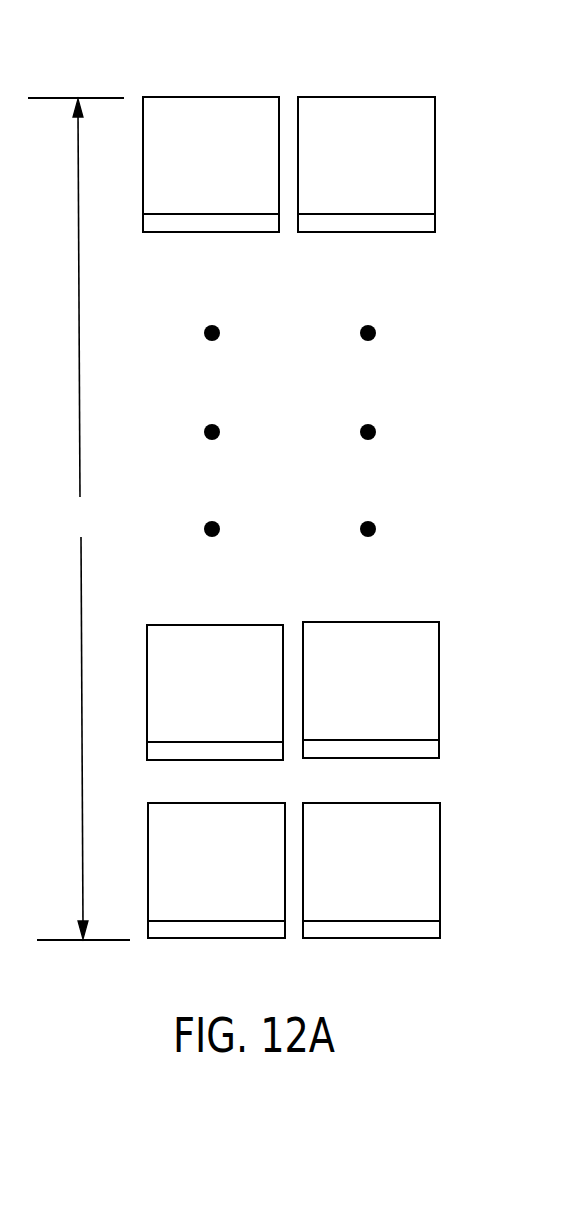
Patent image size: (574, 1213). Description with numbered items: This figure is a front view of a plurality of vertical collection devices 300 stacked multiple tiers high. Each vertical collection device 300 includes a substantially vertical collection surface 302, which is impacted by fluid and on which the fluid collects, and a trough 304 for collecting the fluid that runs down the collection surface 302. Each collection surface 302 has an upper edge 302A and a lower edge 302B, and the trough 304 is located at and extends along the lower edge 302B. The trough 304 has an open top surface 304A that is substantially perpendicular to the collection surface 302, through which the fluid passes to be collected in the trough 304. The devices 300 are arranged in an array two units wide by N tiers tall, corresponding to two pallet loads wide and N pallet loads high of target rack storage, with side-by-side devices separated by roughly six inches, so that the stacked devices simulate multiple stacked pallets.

The vertical collection device 300 is at (308, 518).
The substantially vertical collection surface 302 is at (440, 655).
The upper edge 302A is at (391, 622).
The lower edge 302B is at (345, 740).
The trough 304 is at (440, 748).
The open top surface 304A is at (420, 740).
The number of tiers N is at (79, 519).